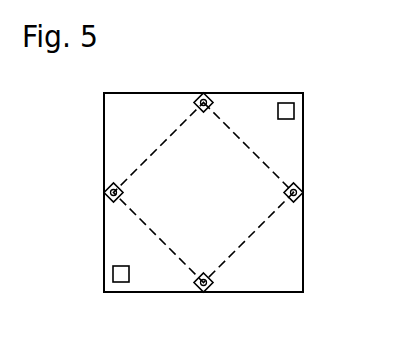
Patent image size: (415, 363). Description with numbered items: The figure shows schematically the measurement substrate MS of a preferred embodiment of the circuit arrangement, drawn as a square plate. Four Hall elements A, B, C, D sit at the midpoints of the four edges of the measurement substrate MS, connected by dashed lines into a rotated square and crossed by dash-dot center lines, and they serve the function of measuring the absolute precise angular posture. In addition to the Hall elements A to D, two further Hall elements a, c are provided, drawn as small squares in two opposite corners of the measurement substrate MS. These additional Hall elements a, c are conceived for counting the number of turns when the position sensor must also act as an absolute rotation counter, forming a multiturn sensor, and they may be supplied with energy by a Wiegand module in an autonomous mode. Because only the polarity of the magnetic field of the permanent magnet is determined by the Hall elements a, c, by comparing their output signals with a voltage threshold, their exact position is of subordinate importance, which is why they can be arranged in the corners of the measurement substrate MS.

The measurement substrate MS is at (303, 153).
The Hall element A is at (204, 192).
The Hall element B is at (204, 192).
The Hall element C is at (204, 192).
The Hall element D is at (204, 192).
The additional Hall element a is at (273, 111).
The additional Hall element c is at (130, 275).